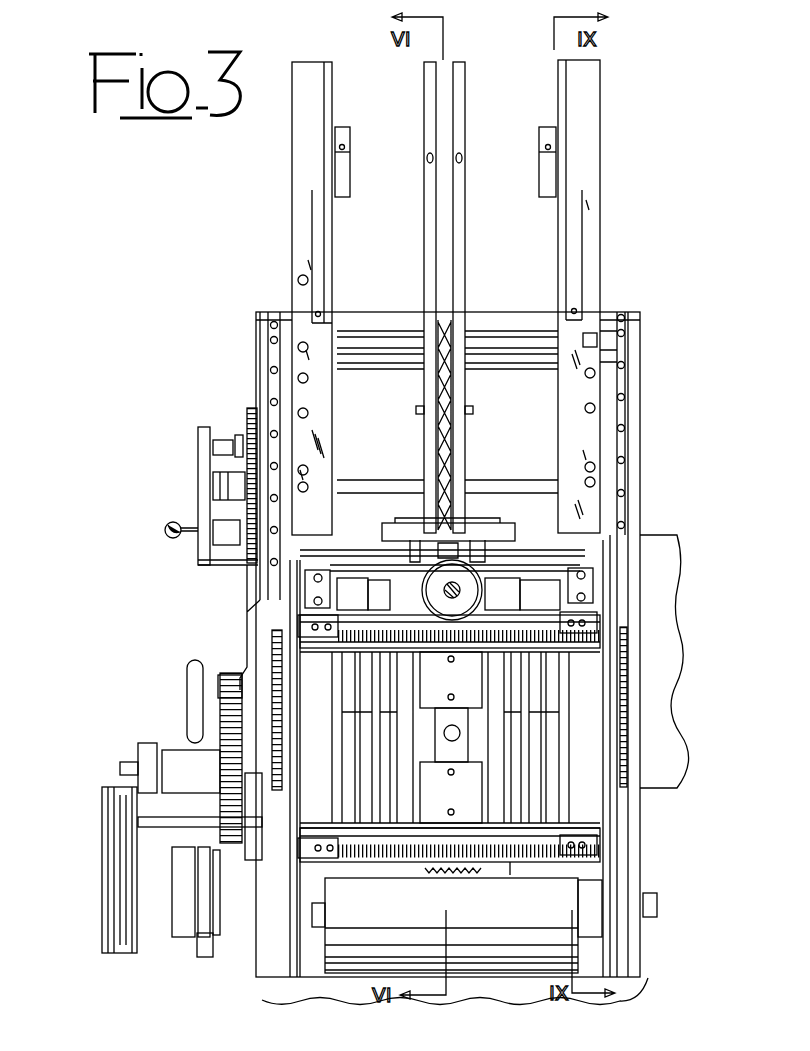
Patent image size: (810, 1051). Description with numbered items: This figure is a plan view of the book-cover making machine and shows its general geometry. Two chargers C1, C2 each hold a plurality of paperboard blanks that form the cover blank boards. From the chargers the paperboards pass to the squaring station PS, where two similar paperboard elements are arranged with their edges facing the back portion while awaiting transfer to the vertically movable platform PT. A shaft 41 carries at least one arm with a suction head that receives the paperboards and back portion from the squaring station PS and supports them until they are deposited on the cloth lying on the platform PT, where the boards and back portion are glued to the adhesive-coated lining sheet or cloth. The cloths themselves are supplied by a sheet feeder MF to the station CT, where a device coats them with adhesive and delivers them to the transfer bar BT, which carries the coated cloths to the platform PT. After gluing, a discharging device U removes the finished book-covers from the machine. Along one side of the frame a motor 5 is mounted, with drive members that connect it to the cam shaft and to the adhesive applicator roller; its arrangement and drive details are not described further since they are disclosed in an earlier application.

The shaft 41 is at (451, 600).
The motor 5 is at (182, 760).
The charger C1 is at (376, 241).
The charger C2 is at (508, 241).
The squaring station PS is at (446, 424).
The vertically movable platform PT is at (450, 737).
The cloth coating station CT is at (484, 925).
The transfer bar BT is at (525, 846).
The discharging device U is at (664, 661).
The sheet feeder MF is at (645, 992).